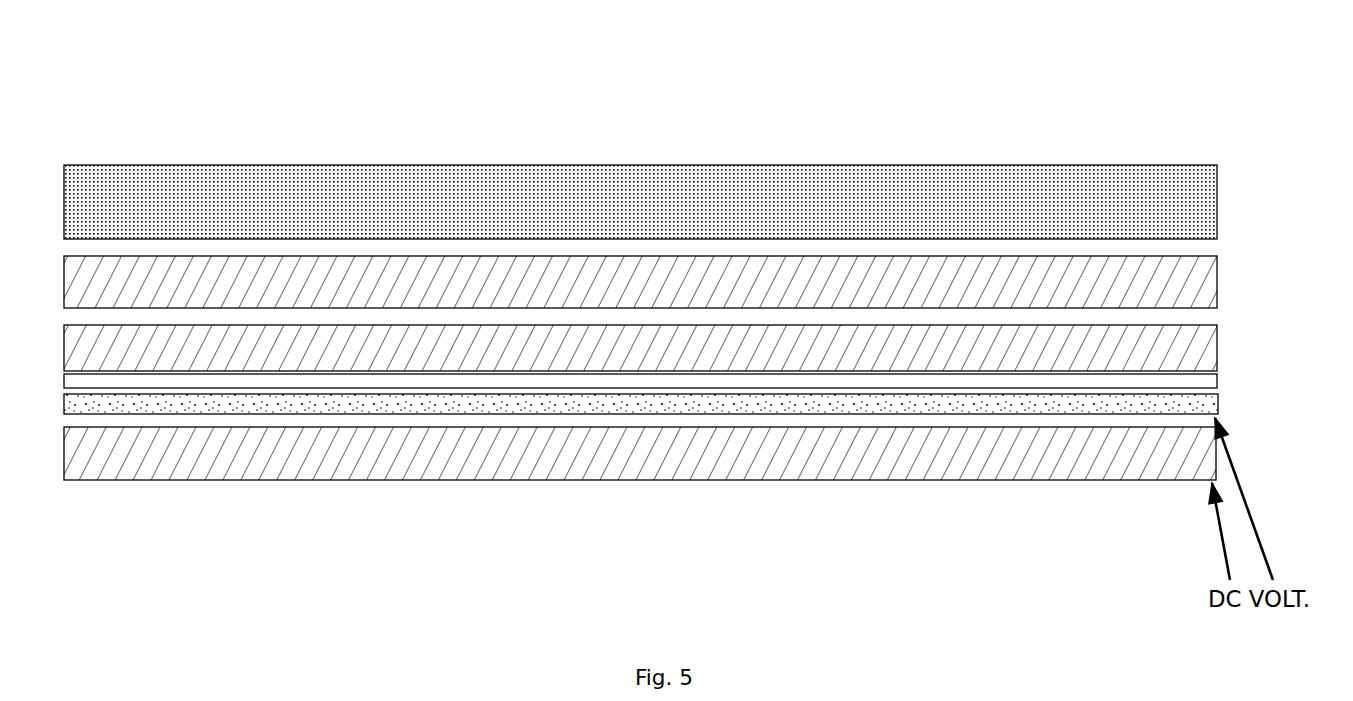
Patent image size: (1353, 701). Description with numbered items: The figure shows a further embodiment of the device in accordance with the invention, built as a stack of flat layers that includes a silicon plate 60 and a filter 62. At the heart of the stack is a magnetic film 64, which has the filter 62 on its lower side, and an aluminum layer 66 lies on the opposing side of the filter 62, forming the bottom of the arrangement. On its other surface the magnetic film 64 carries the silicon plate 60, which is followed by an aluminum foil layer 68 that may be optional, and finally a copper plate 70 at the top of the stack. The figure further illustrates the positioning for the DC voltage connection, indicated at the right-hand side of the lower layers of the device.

The copper plate 70 is at (203, 193).
The aluminum foil layer 68 is at (418, 280).
The silicon plate 60 is at (668, 345).
The magnetic film 64 is at (880, 380).
The filter 62 is at (603, 407).
The aluminum layer 66 is at (787, 447).